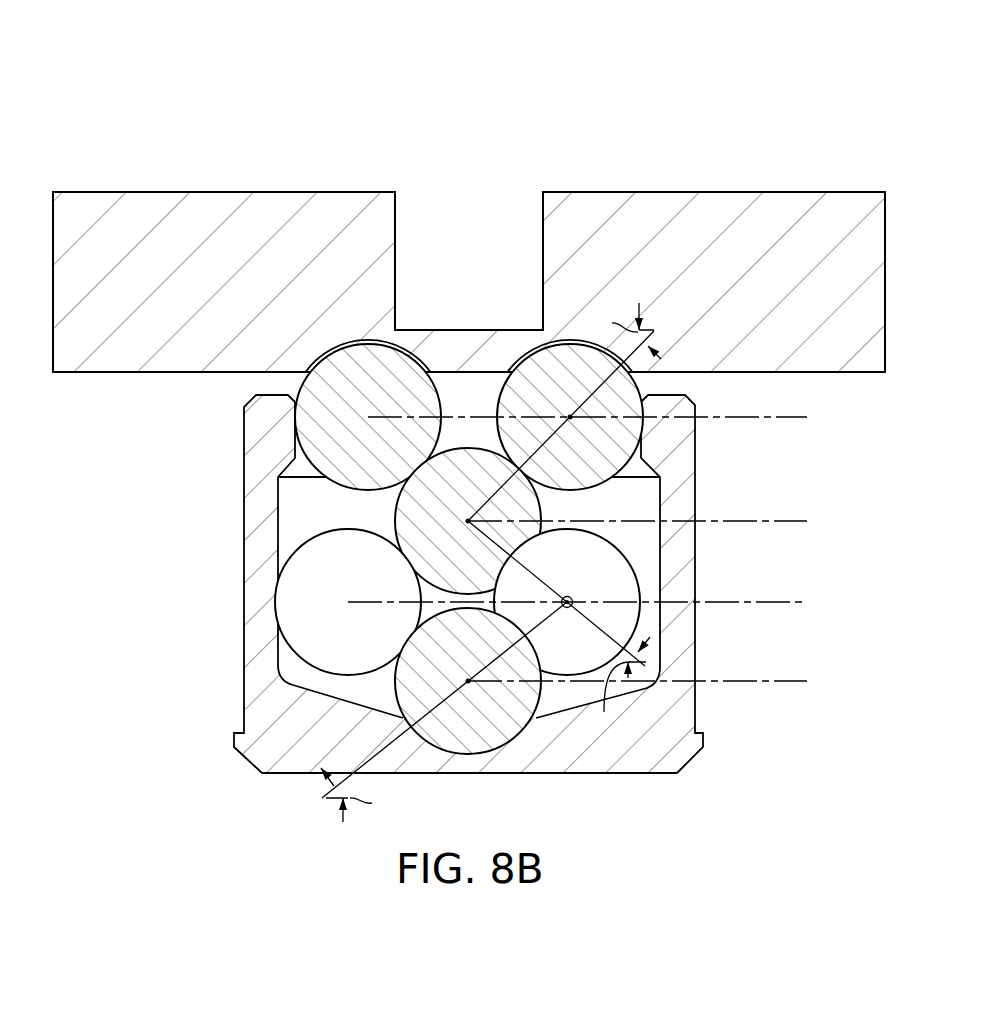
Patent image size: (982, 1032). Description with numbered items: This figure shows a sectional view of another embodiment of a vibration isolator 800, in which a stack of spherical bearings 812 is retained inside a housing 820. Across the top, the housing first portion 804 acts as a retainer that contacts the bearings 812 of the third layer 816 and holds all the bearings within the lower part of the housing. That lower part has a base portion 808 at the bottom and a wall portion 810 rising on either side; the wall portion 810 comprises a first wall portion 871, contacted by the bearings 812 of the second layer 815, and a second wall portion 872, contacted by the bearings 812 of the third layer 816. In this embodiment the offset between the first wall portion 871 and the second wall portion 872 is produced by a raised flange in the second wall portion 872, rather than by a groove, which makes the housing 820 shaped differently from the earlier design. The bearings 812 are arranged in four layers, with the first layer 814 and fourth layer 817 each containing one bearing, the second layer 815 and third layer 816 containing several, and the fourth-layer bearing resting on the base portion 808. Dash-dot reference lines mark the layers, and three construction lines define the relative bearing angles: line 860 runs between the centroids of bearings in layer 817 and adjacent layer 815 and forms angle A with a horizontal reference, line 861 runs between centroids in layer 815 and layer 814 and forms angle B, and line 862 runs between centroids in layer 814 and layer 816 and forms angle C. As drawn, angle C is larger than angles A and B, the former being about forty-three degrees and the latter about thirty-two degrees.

The vibration isolator 800 is at (461, 416).
The housing first portion 804 is at (148, 200).
The base portion 808 is at (288, 772).
The wall portion 810 is at (440, 606).
The bearing 812 is at (628, 437).
The first layer 814 is at (790, 522).
The second layer 815 is at (790, 603).
The third layer 816 is at (790, 418).
The fourth layer 817 is at (790, 682).
The housing 820 is at (397, 572).
The line 860 is at (388, 751).
The line 861 is at (603, 627).
The line 862 is at (585, 400).
The first wall portion 871 is at (276, 601).
The second wall portion 872 is at (296, 415).